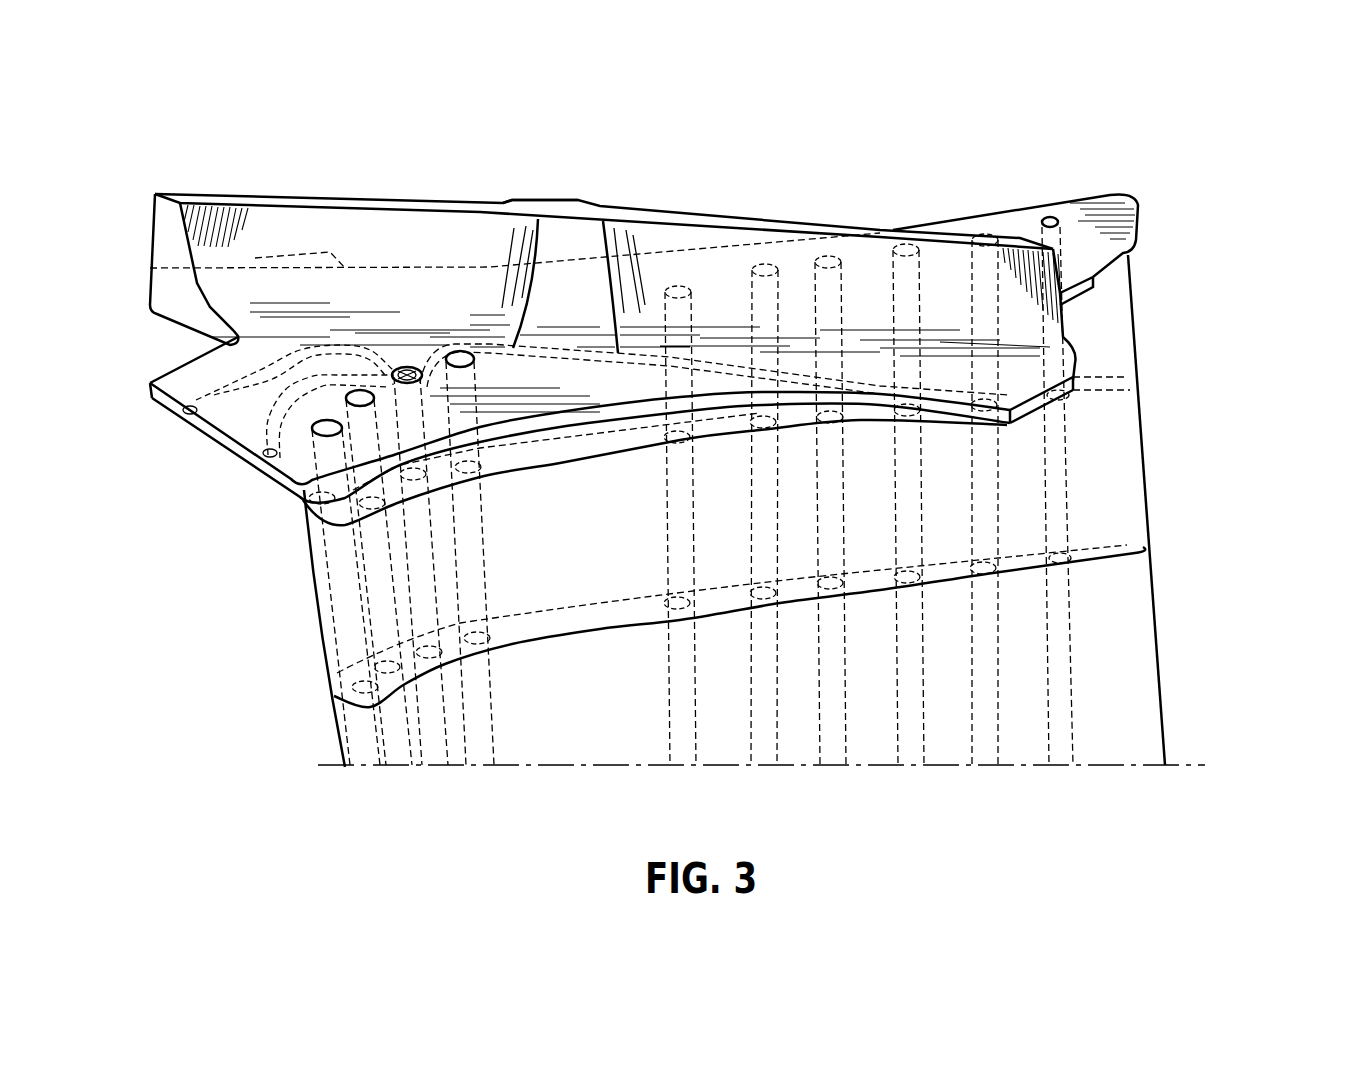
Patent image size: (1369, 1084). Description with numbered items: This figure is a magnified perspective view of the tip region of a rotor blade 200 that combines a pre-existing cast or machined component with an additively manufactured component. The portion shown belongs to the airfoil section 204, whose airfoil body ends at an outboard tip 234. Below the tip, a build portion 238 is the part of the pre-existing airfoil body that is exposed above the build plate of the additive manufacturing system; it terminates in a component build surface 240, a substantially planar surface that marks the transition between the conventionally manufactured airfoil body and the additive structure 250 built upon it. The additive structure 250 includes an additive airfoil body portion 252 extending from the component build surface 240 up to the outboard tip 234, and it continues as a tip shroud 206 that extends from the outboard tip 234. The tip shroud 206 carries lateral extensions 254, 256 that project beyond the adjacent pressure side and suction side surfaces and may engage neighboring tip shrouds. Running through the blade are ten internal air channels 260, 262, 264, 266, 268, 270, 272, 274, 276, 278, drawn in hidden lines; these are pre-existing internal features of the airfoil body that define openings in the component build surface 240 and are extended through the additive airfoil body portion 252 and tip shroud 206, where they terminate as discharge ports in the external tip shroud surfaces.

The rotor blade 200 is at (324, 140).
The airfoil section 204 is at (1263, 250).
The tip shroud 206 is at (557, 210).
The outboard tip 234 is at (1117, 257).
The build portion 238 is at (1197, 387).
The component build surface 240 is at (1097, 440).
The additive structure 250 is at (147, 512).
The additive airfoil body portion 252 is at (1197, 248).
The lateral extension 254 is at (177, 243).
The lateral extension 256 is at (1005, 292).
The internal air channel 260 is at (373, 747).
The internal air channel 262 is at (402, 727).
The internal air channel 264 is at (435, 730).
The internal air channel 266 is at (478, 730).
The internal air channel 268 is at (687, 743).
The internal air channel 270 is at (767, 737).
The internal air channel 272 is at (830, 732).
The internal air channel 274 is at (910, 735).
The internal air channel 276 is at (985, 743).
The internal air channel 278 is at (1060, 743).